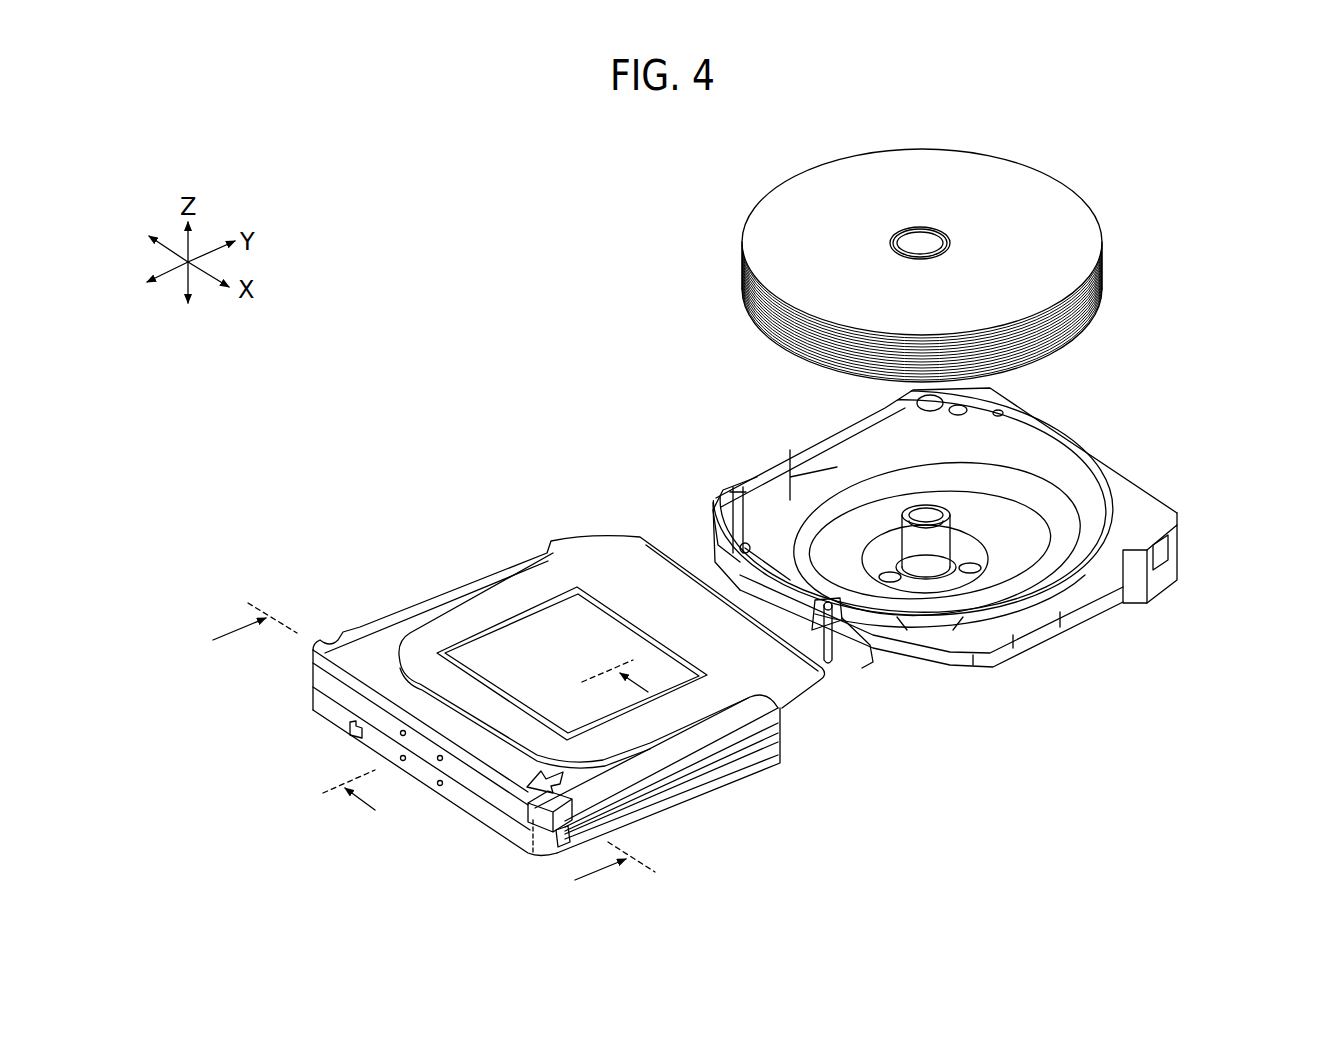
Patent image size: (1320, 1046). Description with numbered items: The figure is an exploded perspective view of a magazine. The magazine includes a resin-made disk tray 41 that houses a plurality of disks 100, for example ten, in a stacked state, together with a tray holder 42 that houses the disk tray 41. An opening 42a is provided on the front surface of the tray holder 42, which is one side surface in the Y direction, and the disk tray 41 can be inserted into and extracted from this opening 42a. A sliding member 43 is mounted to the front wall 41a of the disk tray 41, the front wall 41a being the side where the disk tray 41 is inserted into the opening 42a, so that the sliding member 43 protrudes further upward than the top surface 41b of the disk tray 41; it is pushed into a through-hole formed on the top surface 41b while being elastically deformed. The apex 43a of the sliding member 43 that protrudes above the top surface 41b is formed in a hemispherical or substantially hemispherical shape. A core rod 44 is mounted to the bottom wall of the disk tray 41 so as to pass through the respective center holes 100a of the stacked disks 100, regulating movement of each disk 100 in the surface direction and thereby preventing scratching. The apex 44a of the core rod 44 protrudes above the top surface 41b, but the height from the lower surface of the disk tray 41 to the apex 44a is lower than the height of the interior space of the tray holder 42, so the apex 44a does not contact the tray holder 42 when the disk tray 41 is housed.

The disk 100 is at (1037, 195).
The center hole 100a is at (918, 240).
The disk tray 41 is at (1022, 422).
The front wall 41a is at (704, 509).
The top surface 41b is at (1150, 533).
The tray holder 42 is at (487, 607).
The opening 42a is at (796, 740).
The sliding member 43 is at (750, 553).
The apex 43a is at (733, 500).
The core rod 44 is at (913, 543).
The apex 44a is at (905, 512).